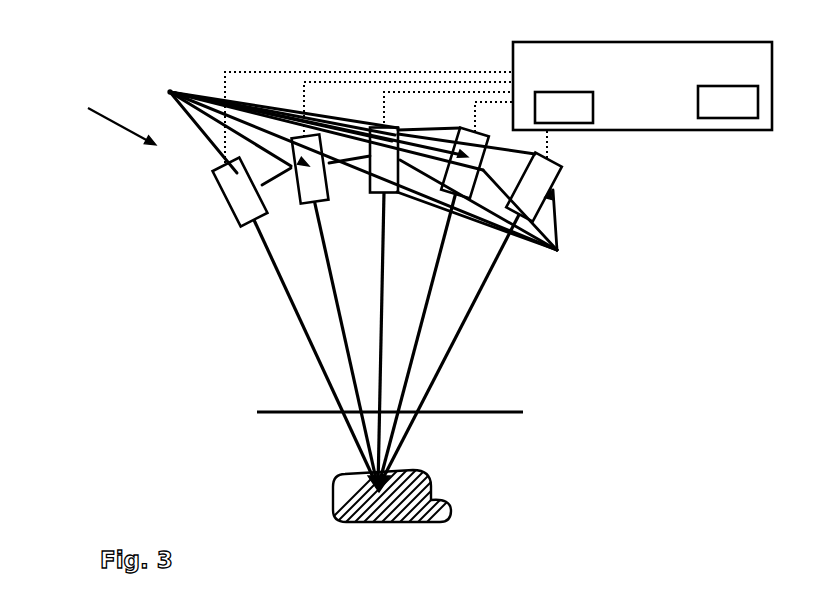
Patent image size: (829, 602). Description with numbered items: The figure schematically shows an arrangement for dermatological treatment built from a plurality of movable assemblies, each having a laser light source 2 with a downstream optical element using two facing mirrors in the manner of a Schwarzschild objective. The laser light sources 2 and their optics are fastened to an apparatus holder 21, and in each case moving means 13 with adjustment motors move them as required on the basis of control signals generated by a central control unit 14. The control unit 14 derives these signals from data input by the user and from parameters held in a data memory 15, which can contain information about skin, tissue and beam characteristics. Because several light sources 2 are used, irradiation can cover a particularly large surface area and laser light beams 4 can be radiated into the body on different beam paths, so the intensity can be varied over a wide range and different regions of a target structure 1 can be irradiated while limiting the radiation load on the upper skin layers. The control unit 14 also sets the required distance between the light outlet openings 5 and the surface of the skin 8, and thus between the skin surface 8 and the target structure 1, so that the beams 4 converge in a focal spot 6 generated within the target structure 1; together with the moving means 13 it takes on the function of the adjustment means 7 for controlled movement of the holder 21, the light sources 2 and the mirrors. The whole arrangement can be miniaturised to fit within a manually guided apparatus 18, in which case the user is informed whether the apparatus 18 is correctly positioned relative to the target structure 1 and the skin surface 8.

The target structure 1 is at (428, 494).
The laser light source 2 is at (353, 159).
The laser light beam 4 is at (465, 328).
The light outlet opening 5 is at (388, 196).
The focus / illumination spot 6 is at (390, 482).
The adjustment means 7 is at (575, 113).
The surface of the skin 8 is at (297, 412).
The moving means 13 is at (229, 203).
The central control unit 14 is at (656, 100).
The data memory 15 is at (727, 102).
The apparatus 18 is at (102, 117).
The apparatus holder 21 is at (260, 228).